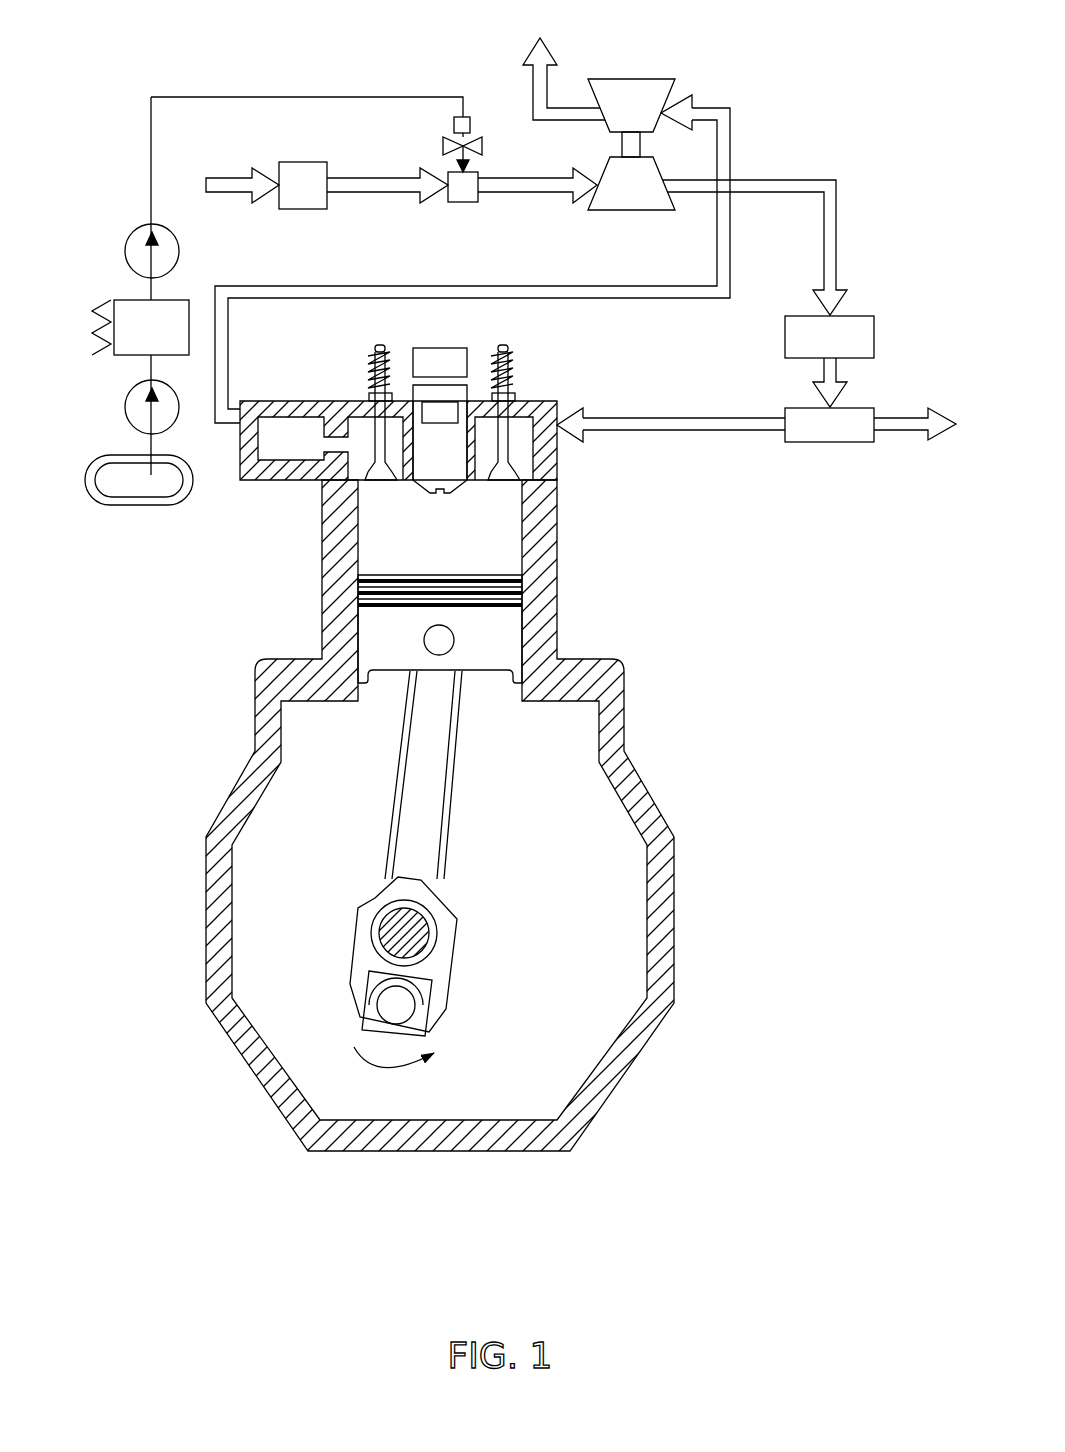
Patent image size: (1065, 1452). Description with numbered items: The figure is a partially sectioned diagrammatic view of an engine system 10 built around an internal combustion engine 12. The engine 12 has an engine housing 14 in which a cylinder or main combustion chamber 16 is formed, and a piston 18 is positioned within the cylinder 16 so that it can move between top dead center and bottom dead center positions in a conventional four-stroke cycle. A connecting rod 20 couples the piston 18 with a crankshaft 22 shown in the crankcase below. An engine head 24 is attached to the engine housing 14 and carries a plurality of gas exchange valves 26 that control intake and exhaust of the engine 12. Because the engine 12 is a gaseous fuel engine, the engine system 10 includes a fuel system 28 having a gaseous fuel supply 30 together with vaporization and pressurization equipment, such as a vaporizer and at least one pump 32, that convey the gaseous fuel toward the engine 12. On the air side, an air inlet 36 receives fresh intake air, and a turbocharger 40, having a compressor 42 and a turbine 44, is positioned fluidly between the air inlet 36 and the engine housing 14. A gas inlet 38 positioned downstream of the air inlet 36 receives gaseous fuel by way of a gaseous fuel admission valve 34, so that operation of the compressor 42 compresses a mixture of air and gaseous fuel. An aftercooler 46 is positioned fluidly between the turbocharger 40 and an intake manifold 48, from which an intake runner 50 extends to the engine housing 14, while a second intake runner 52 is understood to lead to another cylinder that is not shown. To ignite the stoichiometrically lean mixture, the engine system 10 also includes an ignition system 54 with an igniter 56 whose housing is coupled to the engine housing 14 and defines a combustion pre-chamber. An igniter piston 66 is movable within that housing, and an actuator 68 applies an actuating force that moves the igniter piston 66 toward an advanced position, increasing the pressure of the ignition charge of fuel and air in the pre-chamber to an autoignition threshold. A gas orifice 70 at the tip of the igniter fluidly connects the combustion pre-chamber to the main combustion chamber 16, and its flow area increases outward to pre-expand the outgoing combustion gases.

The engine system 10 is at (143, 38).
The internal combustion engine 12 is at (218, 700).
The engine housing 14 is at (322, 527).
The cylinder or main combustion chamber 16 is at (492, 532).
The piston 18 is at (505, 623).
The connecting rod 20 is at (458, 778).
The crankshaft 22 is at (430, 935).
The engine head 24 is at (545, 401).
The gas exchange valves 26 is at (376, 425).
The fuel system 28 is at (77, 300).
The gaseous fuel supply 30 is at (186, 498).
The fuel pump 32 is at (113, 380).
The gaseous fuel admission valve 34 is at (477, 130).
The air inlet 36 is at (302, 162).
The gas inlet 38 is at (463, 202).
The turbocharger 40 is at (680, 48).
The compressor 42 is at (637, 210).
The turbine 44 is at (663, 79).
The aftercooler 46 is at (868, 316).
The intake manifold 48 is at (868, 408).
The intake runner 50 is at (686, 430).
The second intake runner 52 is at (900, 430).
The ignition system 54 is at (411, 345).
The igniter 56 is at (468, 352).
The igniter piston 66 is at (442, 423).
The actuator 68 is at (437, 348).
The gas orifice 70 is at (455, 494).